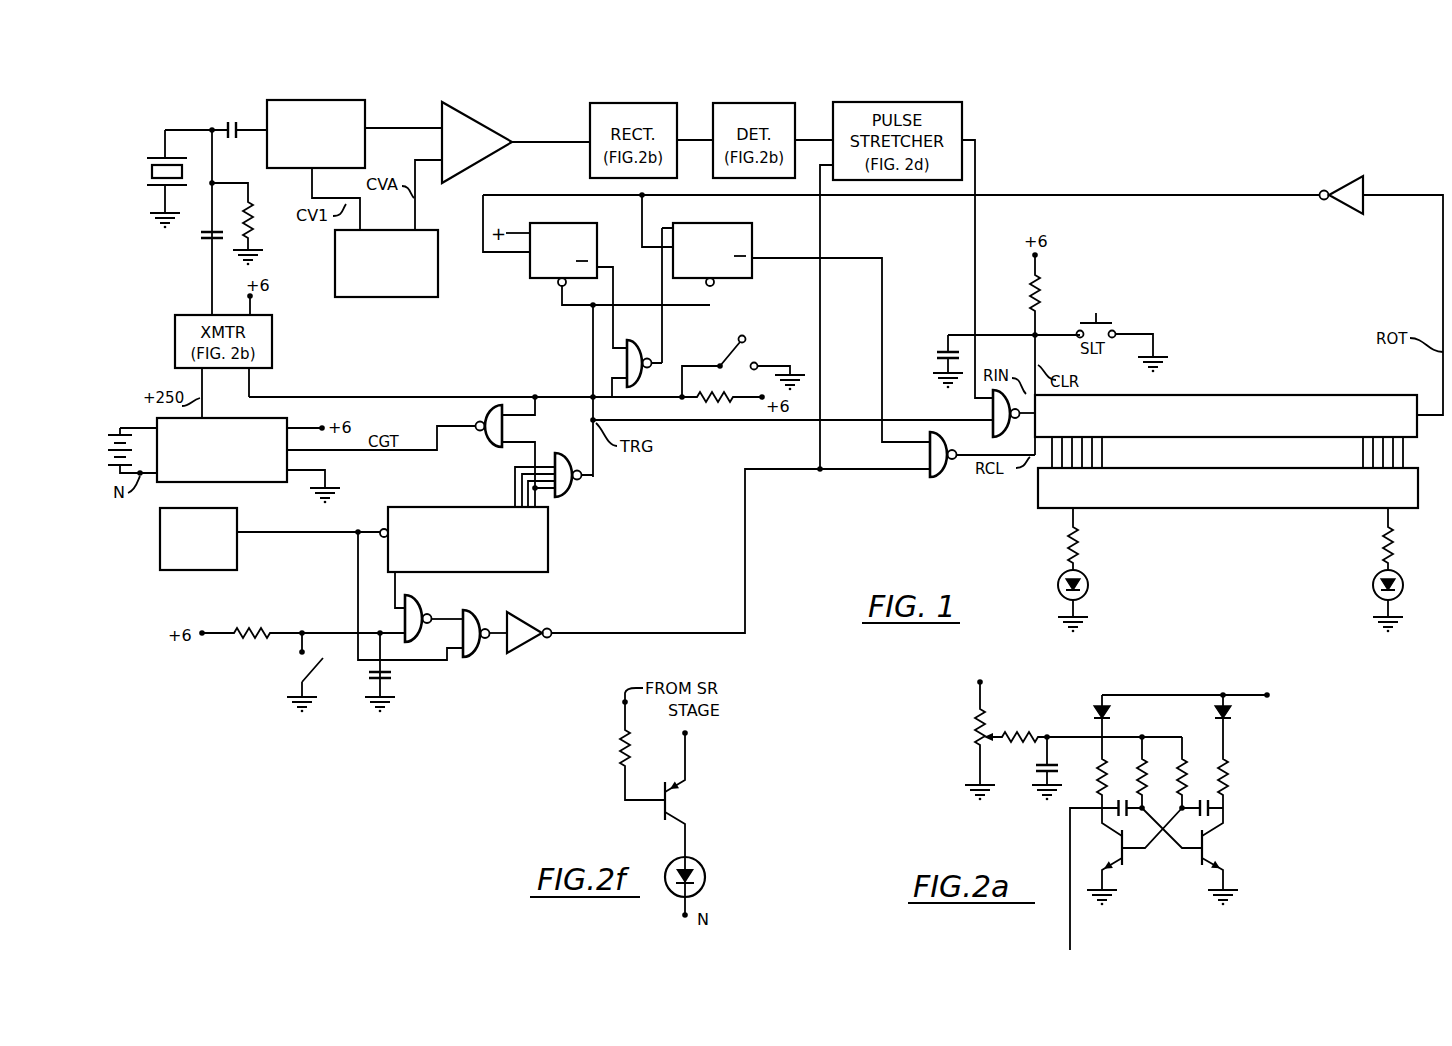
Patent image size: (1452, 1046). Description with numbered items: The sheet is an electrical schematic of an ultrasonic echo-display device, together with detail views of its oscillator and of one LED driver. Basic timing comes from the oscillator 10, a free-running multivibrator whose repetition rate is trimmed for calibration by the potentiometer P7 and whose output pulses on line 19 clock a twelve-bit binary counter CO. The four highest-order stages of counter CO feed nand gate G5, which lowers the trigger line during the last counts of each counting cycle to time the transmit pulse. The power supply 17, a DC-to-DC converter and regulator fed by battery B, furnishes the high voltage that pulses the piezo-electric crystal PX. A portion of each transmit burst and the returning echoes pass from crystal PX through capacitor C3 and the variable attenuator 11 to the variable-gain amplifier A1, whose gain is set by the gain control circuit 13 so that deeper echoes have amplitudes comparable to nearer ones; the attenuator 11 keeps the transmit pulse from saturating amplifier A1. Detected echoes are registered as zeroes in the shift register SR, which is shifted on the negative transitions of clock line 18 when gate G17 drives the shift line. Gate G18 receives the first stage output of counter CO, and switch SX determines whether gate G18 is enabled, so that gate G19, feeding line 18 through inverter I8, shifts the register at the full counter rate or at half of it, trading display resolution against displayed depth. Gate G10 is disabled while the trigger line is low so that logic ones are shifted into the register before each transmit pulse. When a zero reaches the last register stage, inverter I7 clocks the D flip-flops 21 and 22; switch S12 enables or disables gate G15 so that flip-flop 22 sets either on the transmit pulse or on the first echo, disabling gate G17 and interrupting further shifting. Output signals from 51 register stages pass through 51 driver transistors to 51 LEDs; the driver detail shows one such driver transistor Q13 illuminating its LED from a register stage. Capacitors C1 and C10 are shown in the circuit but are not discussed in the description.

In FIG. 1, the variable attenuator circuit 11 is at (336, 100).
In FIG. 1, the variable-gain amplifier A1 is at (478, 102).
In FIG. 1, the gain control circuit 13 is at (438, 268).
In FIG. 1, the Type D flip-flop 21 is at (566, 222).
In FIG. 1, the Type D flip-flop 22 is at (724, 222).
In FIG. 1, the power supply apparatus 17 is at (258, 482).
In FIG. 1, the oscillator 10 is at (180, 570).
In FIG. 2A, the oscillator 10 is at (1176, 880).
In FIG. 1, the oscillator output line 19 is at (354, 535).
In FIG. 2A, the oscillator output line 19 is at (1072, 937).
In FIG. 1, the clock line 18 is at (690, 630).
In FIG. 1, the driver transistors and LEDs 51 is at (1358, 560).
In FIG. 2F, the driver transistor Q13 is at (691, 792).
In FIG. 1, the capacitor C3 is at (231, 120).
In FIG. 1, the capacitor C1 is at (191, 250).
In FIG. 1, the capacitor C10 is at (390, 681).
In FIG. 2A, the potentiometer P7 is at (1002, 736).
In FIG. 1, the nand gate G5 is at (570, 453).
In FIG. 1, the gate G10 is at (986, 413).
In FIG. 1, the gate G15 is at (637, 358).
In FIG. 1, the gate G17 is at (490, 448).
In FIG. 1, the gate G18 is at (423, 597).
In FIG. 1, the gate G19 is at (465, 658).
In FIG. 1, the inverter I7 is at (1340, 206).
In FIG. 1, the inverter I8 is at (523, 648).
In FIG. 1, the switch S12 is at (743, 360).
In FIG. 1, the switch SX is at (289, 671).
In FIG. 1, the piezo-electric crystal PX is at (152, 179).
In FIG. 1, the battery B is at (118, 430).
In FIG. 1, the shift register SR is at (1268, 395).
In FIG. 2F, the light emitting diode LED is at (700, 866).
In FIG. 1, the twelve-bit binary counter CO is at (437, 507).